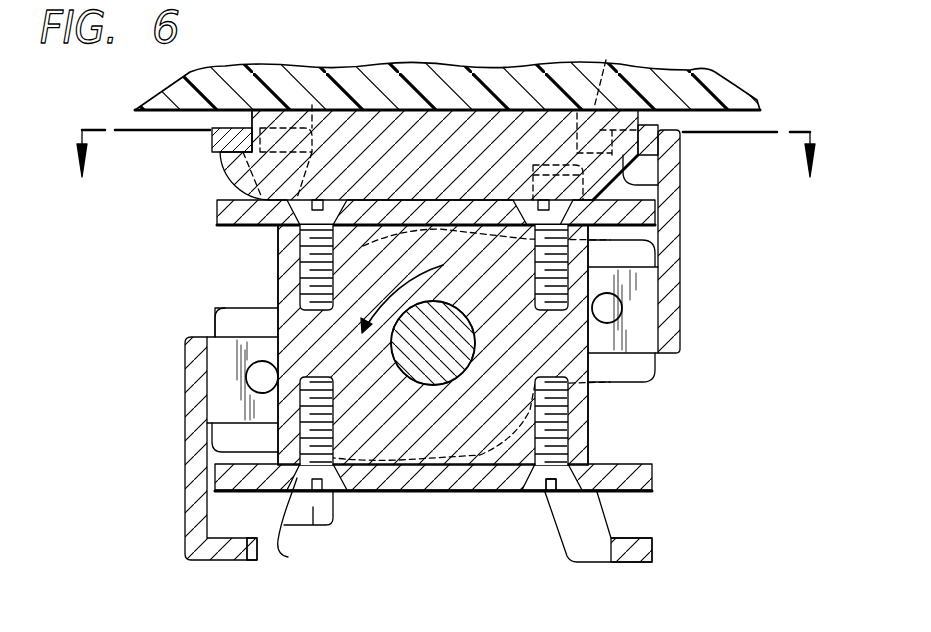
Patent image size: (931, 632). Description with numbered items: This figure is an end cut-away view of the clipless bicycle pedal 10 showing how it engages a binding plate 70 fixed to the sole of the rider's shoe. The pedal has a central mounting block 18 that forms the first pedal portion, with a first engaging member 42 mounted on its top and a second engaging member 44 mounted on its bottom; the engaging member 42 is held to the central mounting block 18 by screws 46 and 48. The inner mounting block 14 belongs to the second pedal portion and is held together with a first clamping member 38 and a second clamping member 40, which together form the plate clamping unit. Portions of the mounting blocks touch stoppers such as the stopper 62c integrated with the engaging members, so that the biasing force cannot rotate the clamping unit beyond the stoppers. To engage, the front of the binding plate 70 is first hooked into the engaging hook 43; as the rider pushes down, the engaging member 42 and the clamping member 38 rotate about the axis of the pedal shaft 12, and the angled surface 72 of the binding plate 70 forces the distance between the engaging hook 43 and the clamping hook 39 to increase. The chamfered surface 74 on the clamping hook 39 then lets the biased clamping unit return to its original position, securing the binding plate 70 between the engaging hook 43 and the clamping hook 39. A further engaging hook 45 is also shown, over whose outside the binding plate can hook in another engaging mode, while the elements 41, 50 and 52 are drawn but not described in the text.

The clipless bicycle pedal 10 is at (802, 80).
The pedal shaft 12 is at (443, 337).
The inner mounting block 14 is at (628, 368).
The central mounting block 18 is at (408, 450).
The first clamping member 38 is at (682, 265).
The clamping hook 39 is at (697, 72).
The second clamping member 40 is at (193, 459).
The foot 41 is at (236, 553).
The first engaging member 42 is at (245, 228).
The engaging hook 43 is at (212, 145).
The second engaging member 44 is at (626, 470).
The engaging hook 45 is at (643, 547).
The screw 46 is at (334, 200).
The screw 48 is at (530, 200).
The pin 50 is at (538, 483).
The tab 52 is at (299, 525).
The stopper 62c is at (315, 507).
The binding plate 70 is at (530, 123).
The angled surface 72 is at (660, 185).
The chamfered surface 74 is at (604, 60).